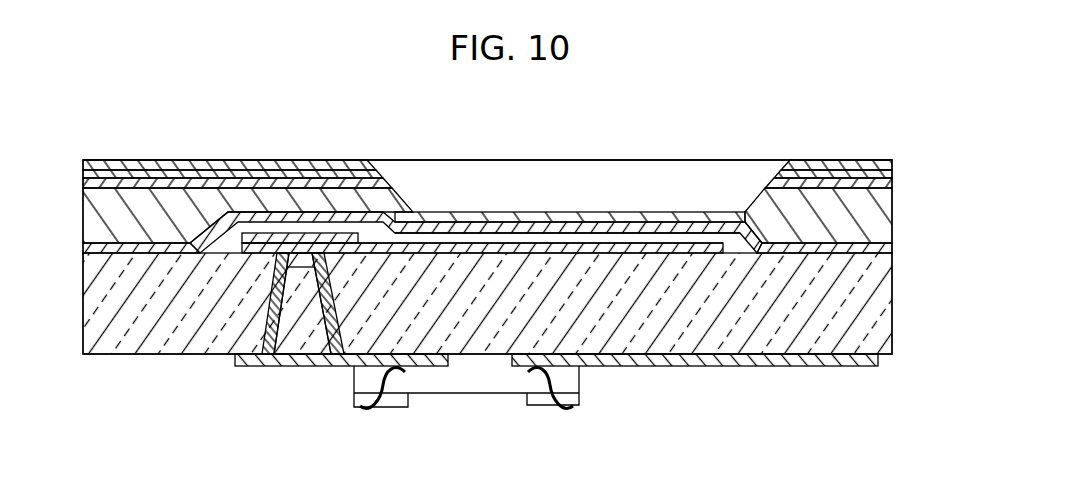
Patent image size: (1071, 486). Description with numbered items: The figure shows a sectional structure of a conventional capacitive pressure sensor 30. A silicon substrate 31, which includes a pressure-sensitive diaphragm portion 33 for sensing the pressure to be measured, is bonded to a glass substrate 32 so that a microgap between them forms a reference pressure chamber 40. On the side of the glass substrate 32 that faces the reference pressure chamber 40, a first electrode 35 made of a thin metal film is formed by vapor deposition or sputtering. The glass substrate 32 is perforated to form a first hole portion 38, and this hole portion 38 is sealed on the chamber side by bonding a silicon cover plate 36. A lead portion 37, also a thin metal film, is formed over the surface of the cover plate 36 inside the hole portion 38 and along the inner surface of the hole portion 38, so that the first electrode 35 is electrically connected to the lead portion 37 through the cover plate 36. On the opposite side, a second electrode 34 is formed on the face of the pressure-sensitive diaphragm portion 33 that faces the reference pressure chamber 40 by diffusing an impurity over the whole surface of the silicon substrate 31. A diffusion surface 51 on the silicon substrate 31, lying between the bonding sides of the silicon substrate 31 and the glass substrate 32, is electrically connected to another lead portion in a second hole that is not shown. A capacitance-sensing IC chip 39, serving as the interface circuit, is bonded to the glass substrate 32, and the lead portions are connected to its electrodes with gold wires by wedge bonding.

The capacitive pressure sensor 30 is at (119, 372).
The silicon substrate 31 is at (892, 205).
The glass substrate 32 is at (892, 296).
The pressure-sensitive diaphragm portion 33 is at (625, 213).
The second electrode 34 is at (568, 224).
The first electrode 35 is at (703, 243).
The silicon cover plate 36 is at (294, 272).
The lead portion 37 is at (296, 268).
The first hole portion 38 is at (252, 337).
The capacitance-sensing IC chip 39 is at (473, 382).
The reference pressure chamber 40 is at (517, 238).
The diffusion surface 51 is at (892, 248).